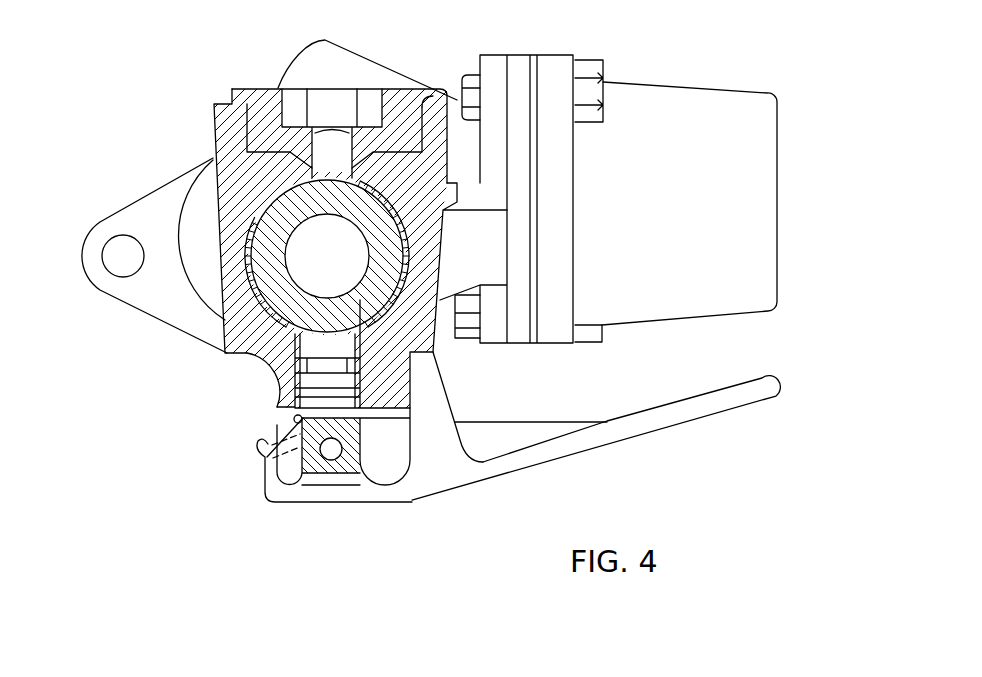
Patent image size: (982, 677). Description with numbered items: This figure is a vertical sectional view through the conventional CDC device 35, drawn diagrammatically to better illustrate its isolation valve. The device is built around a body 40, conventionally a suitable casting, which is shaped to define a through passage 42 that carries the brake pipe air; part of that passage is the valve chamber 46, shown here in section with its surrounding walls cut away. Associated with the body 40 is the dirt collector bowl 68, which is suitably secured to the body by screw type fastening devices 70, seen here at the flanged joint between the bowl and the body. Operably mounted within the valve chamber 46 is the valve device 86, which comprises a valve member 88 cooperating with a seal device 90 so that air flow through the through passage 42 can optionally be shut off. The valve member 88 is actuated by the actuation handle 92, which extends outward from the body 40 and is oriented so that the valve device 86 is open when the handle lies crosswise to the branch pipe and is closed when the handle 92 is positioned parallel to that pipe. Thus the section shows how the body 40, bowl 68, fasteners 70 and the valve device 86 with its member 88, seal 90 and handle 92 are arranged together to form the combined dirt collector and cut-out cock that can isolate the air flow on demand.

The CDC device 35 is at (252, 363).
The body 40 is at (215, 148).
The through passage 42 is at (353, 262).
The valve chamber 46 is at (397, 150).
The dirt collector bowl 68 is at (717, 107).
The screw type fastening devices 70 is at (607, 58).
The valve device 86 is at (268, 192).
The valve member 88 is at (213, 313).
The seal device 90 is at (248, 224).
The actuation handle 92 is at (735, 398).